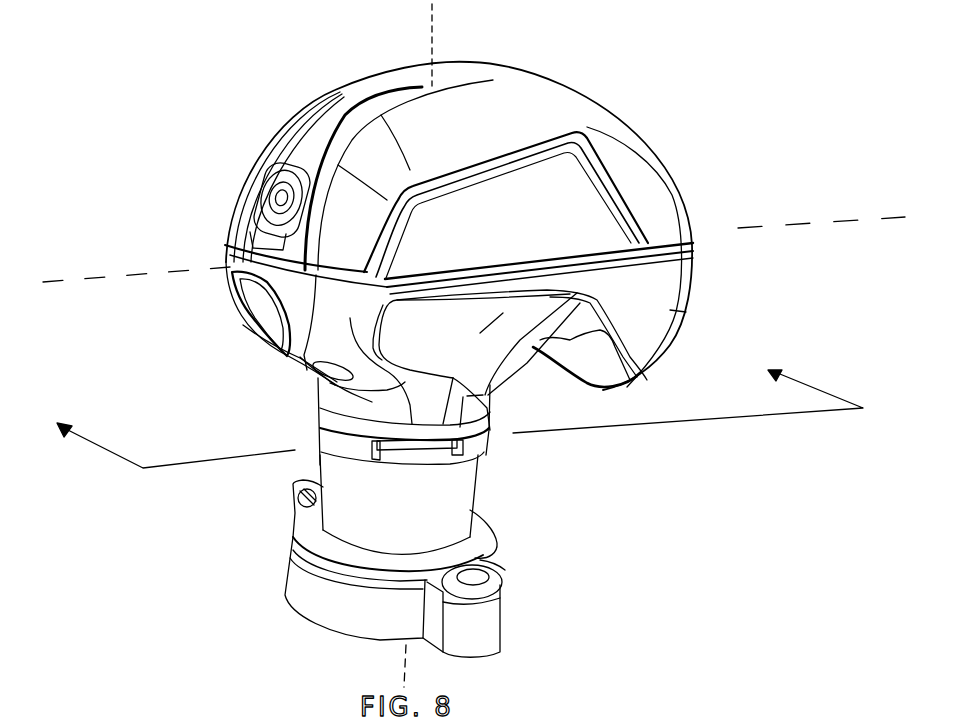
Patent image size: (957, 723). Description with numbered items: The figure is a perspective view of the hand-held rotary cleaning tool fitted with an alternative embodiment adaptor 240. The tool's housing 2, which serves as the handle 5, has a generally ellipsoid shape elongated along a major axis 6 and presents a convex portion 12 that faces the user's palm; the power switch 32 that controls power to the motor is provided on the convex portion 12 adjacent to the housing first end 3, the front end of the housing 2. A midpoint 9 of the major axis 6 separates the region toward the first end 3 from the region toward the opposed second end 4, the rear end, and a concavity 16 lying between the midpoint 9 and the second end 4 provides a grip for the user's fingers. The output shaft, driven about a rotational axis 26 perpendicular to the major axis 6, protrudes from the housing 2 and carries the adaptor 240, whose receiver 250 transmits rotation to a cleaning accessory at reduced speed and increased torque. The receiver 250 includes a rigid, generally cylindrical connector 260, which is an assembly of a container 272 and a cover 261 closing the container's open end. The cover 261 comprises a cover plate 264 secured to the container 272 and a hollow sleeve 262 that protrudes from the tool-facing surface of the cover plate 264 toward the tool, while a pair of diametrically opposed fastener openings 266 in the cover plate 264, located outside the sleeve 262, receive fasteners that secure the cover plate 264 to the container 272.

The housing 2 is at (533, 77).
The first end 3 is at (228, 250).
The second end 4 is at (687, 243).
The handle 5 is at (370, 97).
The major axis 6 is at (850, 220).
The midpoint 9 is at (444, 408).
The convex portion 12 is at (582, 100).
The concavity 16 is at (550, 350).
The rotational axis 26 is at (433, 13).
The power switch 32 is at (250, 177).
The adaptor 240 is at (431, 556).
The receiver 250 is at (480, 527).
The connector 260 is at (404, 556).
The cover 261 is at (309, 518).
The sleeve 262 is at (417, 521).
The cover plate 264 is at (310, 541).
The fastener openings 266 is at (493, 562).
The container 272 is at (300, 590).